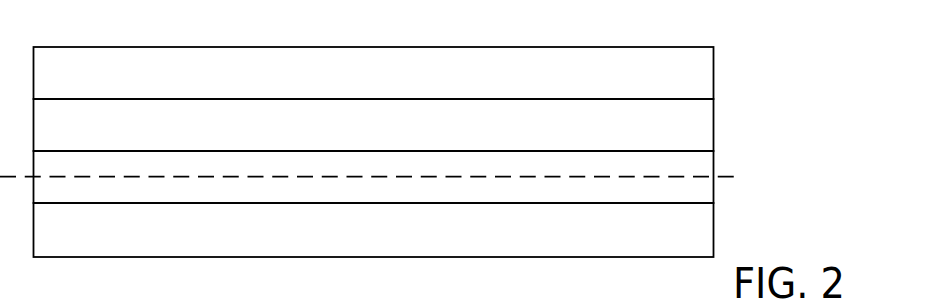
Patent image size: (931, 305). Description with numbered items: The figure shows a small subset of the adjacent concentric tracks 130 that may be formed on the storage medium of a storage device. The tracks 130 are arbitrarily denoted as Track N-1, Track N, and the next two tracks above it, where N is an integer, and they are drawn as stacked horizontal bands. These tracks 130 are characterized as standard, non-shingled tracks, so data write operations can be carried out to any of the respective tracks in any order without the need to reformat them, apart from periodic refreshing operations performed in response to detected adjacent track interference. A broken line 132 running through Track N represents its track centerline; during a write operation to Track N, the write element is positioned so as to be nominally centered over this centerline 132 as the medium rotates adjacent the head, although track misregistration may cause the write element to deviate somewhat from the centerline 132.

The adjacent concentric tracks 130 is at (418, 131).
The track centerline 132 is at (212, 178).
The Track N is at (406, 177).
The Track N-1 is at (414, 230).